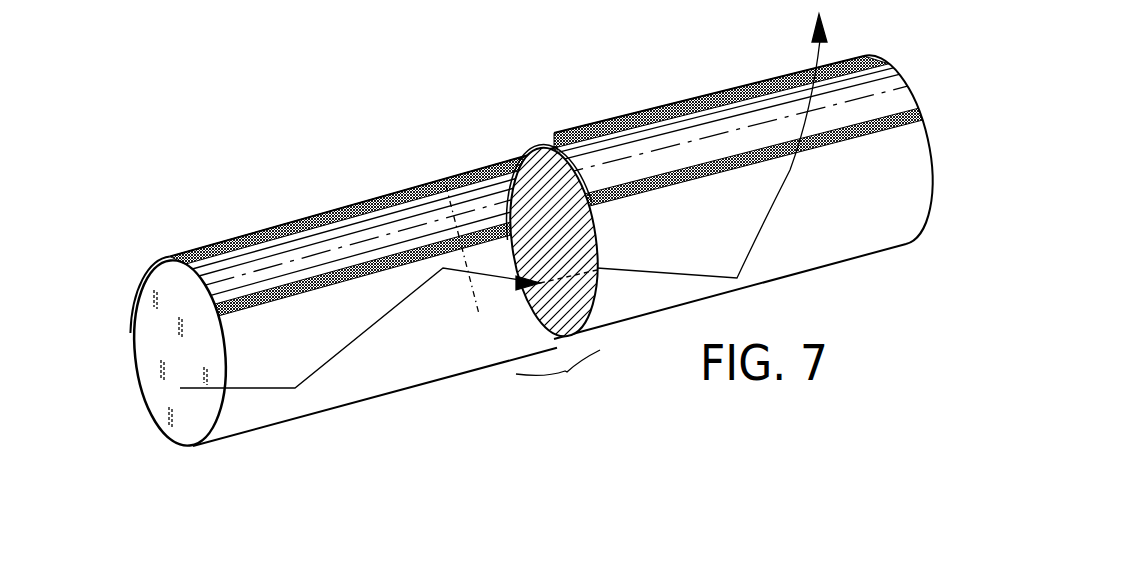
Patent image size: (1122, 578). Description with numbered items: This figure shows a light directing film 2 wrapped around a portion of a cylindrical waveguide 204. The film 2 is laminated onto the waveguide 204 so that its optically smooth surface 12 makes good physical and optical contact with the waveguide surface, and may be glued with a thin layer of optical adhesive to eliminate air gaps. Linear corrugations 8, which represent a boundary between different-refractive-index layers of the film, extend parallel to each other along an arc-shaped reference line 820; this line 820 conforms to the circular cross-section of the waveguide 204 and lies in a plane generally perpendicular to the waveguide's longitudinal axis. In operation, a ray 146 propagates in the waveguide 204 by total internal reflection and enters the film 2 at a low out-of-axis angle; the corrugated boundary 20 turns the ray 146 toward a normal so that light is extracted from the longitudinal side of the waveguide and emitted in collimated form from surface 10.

The light directing film 2 is at (494, 160).
The linear corrugations 8 is at (336, 276).
The surface 10 is at (280, 246).
The optically smooth surface 12 is at (253, 302).
The corrugated boundary 20 is at (148, 266).
The ray 146 is at (420, 296).
The cylindrical waveguide 204 is at (347, 387).
The arc-shaped reference line 820 is at (478, 300).